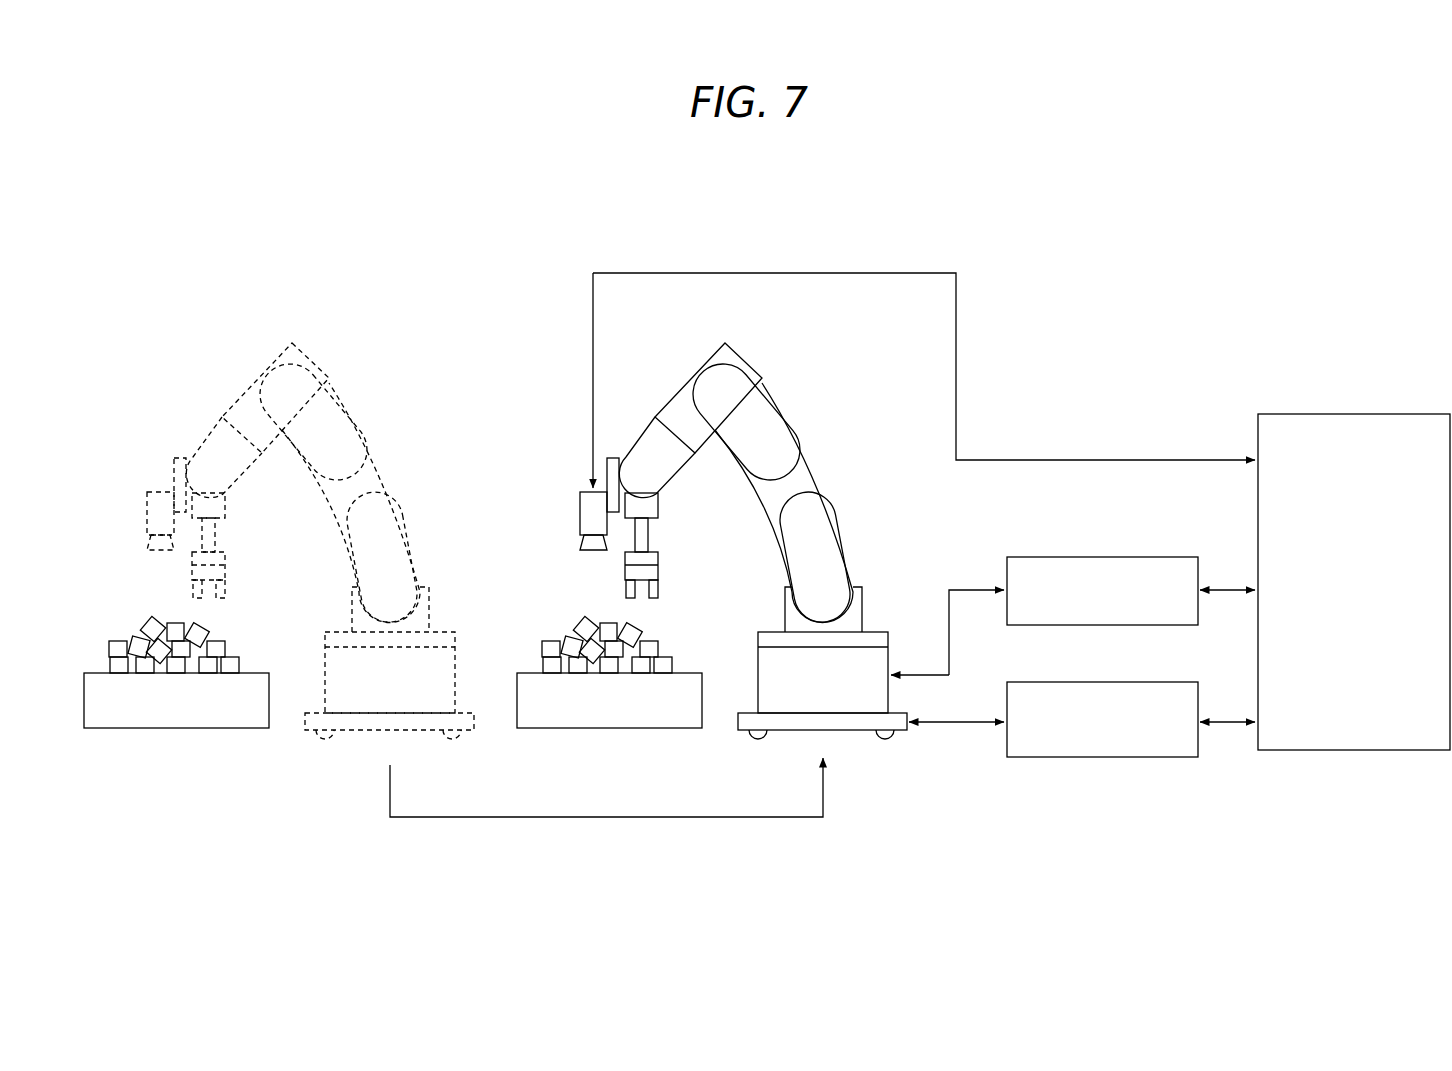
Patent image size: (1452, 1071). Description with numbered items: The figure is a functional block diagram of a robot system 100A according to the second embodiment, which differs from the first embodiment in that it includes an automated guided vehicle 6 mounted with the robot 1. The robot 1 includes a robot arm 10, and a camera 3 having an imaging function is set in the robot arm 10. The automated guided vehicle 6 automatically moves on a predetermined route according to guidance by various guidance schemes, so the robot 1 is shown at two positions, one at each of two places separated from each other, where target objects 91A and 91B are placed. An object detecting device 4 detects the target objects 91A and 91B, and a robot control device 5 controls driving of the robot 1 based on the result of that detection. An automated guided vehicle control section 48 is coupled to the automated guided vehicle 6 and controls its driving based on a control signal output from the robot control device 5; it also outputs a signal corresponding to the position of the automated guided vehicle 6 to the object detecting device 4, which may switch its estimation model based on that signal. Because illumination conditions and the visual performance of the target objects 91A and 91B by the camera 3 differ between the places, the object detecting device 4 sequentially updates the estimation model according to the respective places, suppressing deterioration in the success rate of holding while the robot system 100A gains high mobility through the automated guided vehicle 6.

The robot system 100A is at (1243, 189).
The robot 1 is at (492, 440).
The robot arm 10 is at (771, 397).
The camera 3 is at (589, 512).
The object detecting device 4 is at (1357, 413).
The robot control device 5 is at (1095, 556).
The automated guided vehicle 6 is at (842, 721).
The automated guided vehicle control section 48 is at (1092, 758).
The target object 91A is at (572, 647).
The target object 91B is at (139, 647).